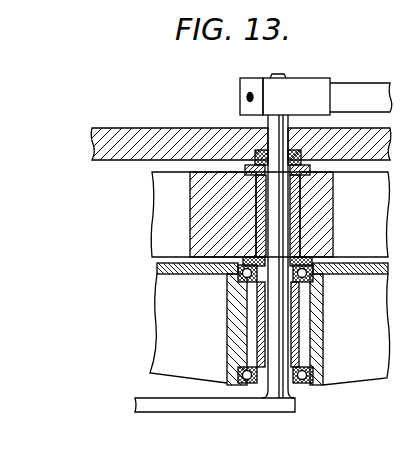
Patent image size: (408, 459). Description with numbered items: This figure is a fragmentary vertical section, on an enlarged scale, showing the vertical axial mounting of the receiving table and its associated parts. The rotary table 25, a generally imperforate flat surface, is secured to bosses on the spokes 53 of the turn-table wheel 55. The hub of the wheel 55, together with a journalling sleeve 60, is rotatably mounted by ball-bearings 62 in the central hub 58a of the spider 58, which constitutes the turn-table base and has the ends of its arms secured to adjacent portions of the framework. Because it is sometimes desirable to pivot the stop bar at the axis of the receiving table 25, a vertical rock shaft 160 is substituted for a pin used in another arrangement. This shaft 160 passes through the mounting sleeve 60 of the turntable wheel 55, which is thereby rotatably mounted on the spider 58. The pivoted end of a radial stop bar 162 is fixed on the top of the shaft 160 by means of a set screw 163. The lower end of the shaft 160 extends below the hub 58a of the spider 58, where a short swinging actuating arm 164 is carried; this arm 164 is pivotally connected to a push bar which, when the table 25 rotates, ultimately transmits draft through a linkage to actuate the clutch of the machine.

The rotary table 25 is at (104, 130).
The spokes 53 is at (165, 235).
The turn-table wheel 55 is at (236, 214).
The spider 58 is at (241, 324).
The central hub 58a is at (322, 328).
The journalling sleeve 60 is at (292, 219).
The ball-bearings 62 is at (243, 278).
The vertical rock shaft 160 is at (287, 125).
The radial stop bar 162 is at (372, 90).
The set screw 163 is at (246, 97).
The swinging actuating arm 164 is at (190, 413).